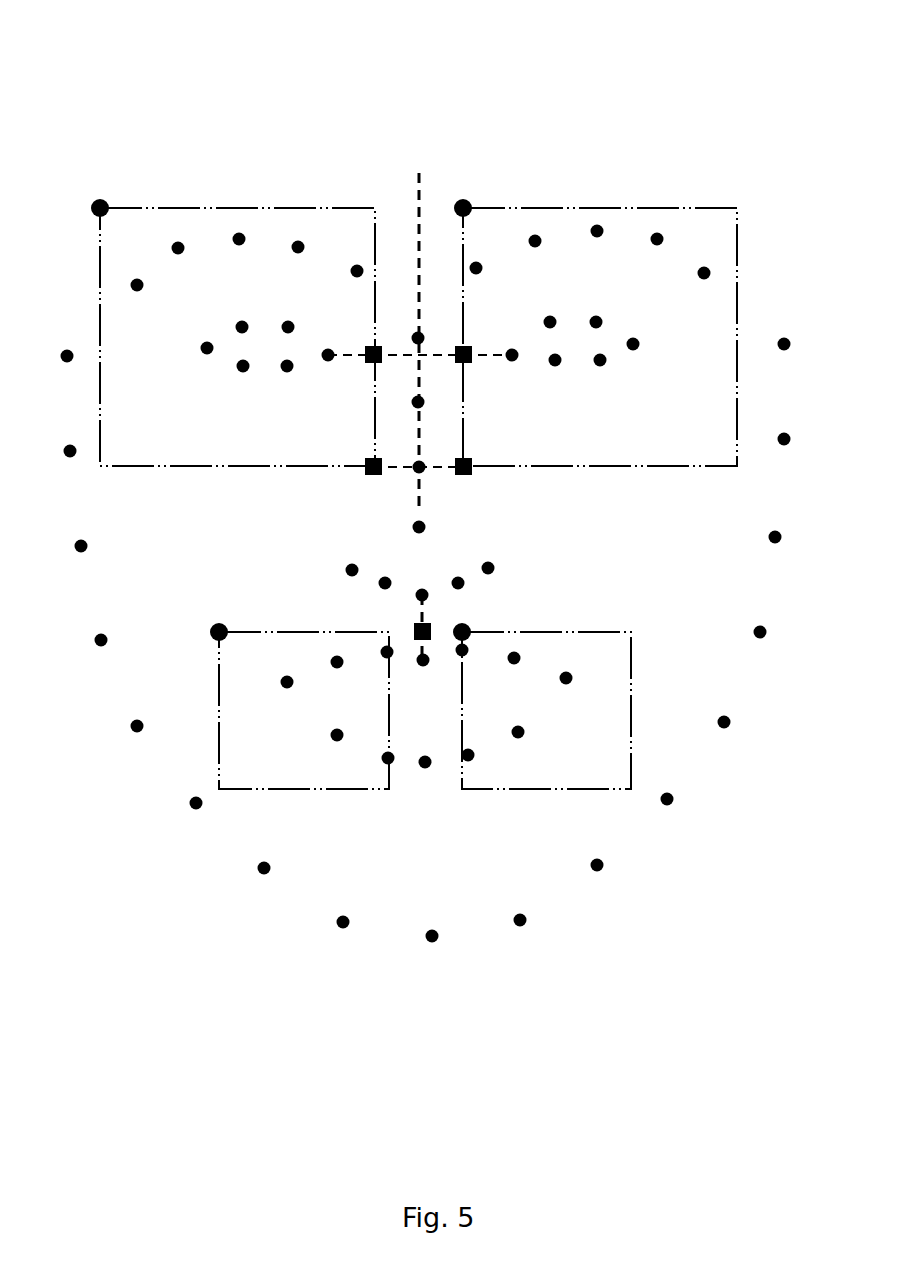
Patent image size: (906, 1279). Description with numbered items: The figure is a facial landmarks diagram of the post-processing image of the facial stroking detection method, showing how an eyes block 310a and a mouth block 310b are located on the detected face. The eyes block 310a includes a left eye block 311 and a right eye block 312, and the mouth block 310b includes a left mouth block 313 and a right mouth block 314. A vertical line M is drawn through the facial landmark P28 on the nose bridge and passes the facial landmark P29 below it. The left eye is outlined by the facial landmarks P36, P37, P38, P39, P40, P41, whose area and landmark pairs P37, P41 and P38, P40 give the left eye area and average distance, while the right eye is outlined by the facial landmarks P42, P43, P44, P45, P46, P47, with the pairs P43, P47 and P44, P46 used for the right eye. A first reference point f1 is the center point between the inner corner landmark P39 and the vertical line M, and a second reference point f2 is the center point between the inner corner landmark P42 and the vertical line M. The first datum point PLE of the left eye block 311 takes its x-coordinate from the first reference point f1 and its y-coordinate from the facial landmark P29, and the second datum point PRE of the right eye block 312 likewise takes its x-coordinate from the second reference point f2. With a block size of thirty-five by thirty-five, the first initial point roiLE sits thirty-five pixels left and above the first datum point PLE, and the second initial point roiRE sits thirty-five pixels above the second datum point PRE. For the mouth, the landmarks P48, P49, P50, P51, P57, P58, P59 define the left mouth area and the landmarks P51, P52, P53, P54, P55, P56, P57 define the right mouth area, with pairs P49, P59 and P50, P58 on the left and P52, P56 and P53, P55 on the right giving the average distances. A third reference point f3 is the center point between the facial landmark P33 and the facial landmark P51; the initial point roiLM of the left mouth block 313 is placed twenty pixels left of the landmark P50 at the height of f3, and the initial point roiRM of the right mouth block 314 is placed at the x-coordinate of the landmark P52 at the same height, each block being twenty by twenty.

The eyes block 310a is at (588, 73).
The left eye block 311 is at (347, 207).
The right eye block 312 is at (602, 207).
The mouth block 310b is at (552, 995).
The left mouth block 313 is at (357, 789).
The right mouth block 314 is at (545, 789).
The vertical line M is at (418, 401).
The first initial point roiLE is at (100, 208).
The second initial point roiRE is at (463, 208).
The third initial point roiLM is at (219, 632).
The fourth initial point roiRM is at (462, 632).
The first reference point f1 is at (373, 362).
The second reference point f2 is at (463, 362).
The third reference point f3 is at (416, 628).
The first datum point PLE is at (373, 474).
The second datum point PRE is at (463, 474).
The facial landmark P28 is at (418, 402).
The facial landmark P29 is at (440, 486).
The facial landmark P33 is at (422, 595).
The facial landmark P36 is at (207, 348).
The facial landmark P37 is at (242, 327).
The facial landmark P38 is at (288, 327).
The facial landmark P39 is at (336, 338).
The facial landmark P40 is at (299, 386).
The facial landmark P41 is at (237, 386).
The facial landmark P42 is at (512, 334).
The facial landmark P43 is at (550, 322).
The facial landmark P44 is at (611, 301).
The facial landmark P45 is at (658, 346).
The facial landmark P46 is at (624, 374).
The facial landmark P47 is at (577, 374).
The facial landmark P48 is at (287, 682).
The facial landmark P49 is at (337, 662).
The facial landmark P50 is at (387, 652).
The facial landmark P51 is at (423, 683).
The facial landmark P52 is at (462, 650).
The facial landmark P53 is at (514, 658).
The facial landmark P54 is at (584, 662).
The facial landmark P55 is at (543, 738).
The facial landmark P56 is at (491, 765).
The facial landmark P57 is at (429, 782).
The facial landmark P58 is at (388, 758).
The facial landmark P59 is at (337, 735).